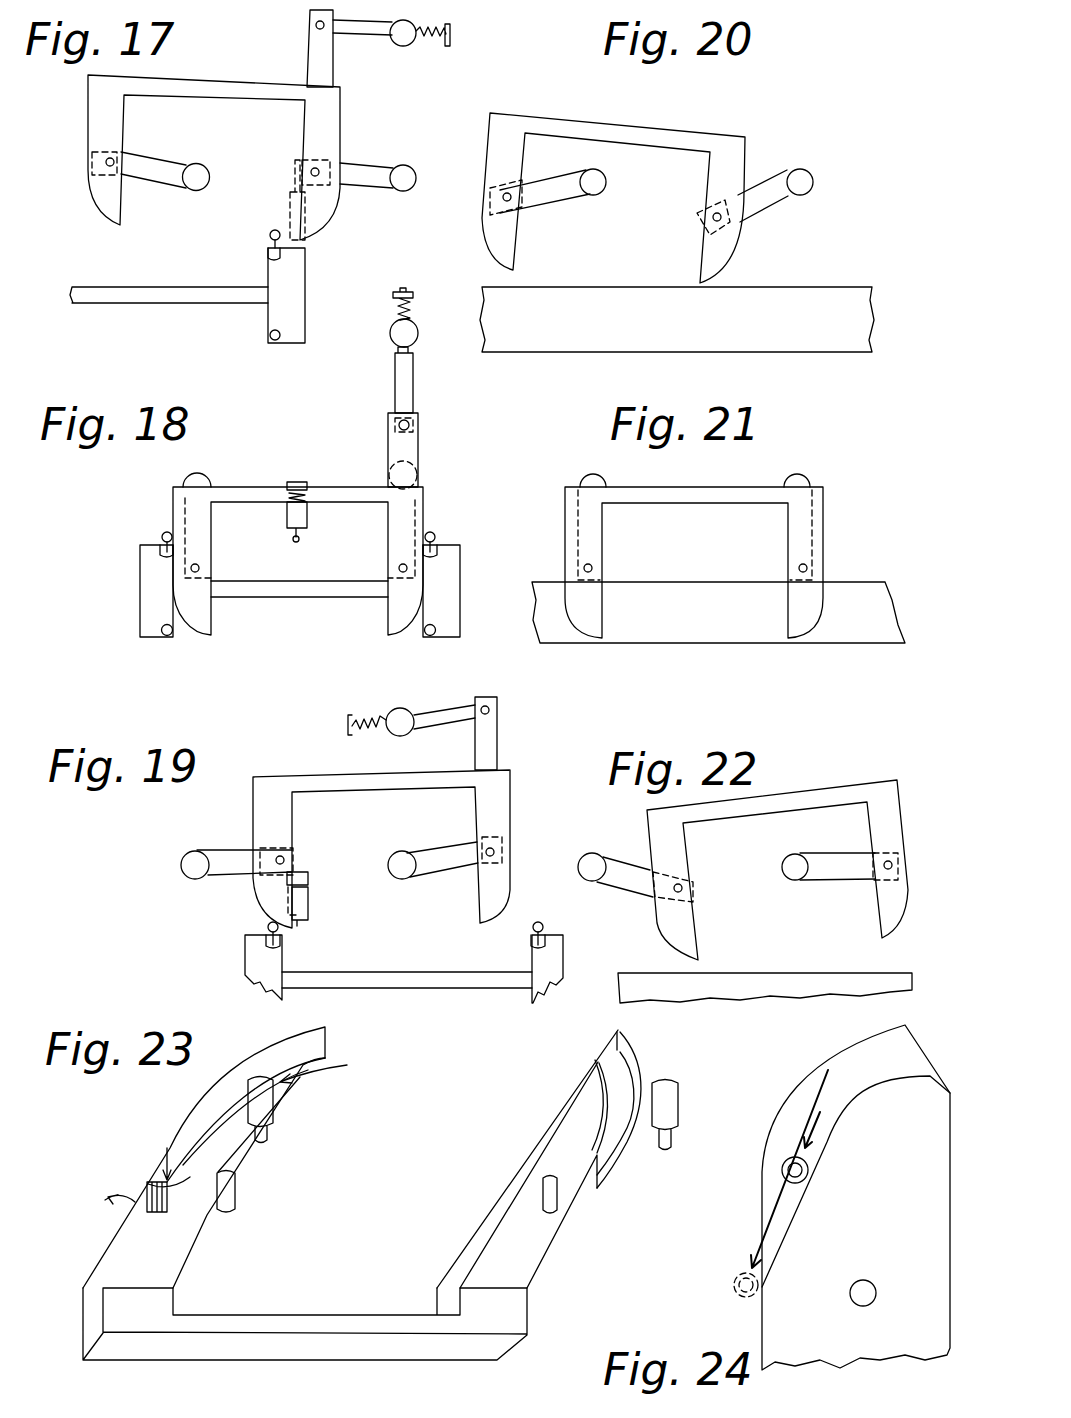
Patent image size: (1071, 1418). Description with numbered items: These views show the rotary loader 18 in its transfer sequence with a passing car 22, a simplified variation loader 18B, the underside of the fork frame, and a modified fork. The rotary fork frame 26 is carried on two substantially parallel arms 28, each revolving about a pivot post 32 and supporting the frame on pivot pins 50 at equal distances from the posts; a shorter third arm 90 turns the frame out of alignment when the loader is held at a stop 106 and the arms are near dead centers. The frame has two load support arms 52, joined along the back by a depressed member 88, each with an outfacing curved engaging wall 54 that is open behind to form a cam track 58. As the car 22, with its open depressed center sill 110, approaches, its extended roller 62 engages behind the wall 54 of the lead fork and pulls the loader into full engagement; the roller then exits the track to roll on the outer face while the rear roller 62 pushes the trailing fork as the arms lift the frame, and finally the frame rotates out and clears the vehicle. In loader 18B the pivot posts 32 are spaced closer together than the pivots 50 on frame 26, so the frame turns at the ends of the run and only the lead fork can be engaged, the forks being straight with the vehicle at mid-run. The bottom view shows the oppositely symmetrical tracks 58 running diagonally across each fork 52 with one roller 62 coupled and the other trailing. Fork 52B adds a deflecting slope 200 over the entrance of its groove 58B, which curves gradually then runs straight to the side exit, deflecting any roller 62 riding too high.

In FIG. 17, the rotary loader 18 is at (88, 93).
In FIG. 20, the loader 18B is at (768, 123).
In FIG. 21, the loader 18B is at (770, 455).
In FIG. 22, the loader 18B is at (851, 770).
In FIG. 17, the car 22 is at (104, 280).
In FIG. 18, the car 22 is at (158, 640).
In FIG. 20, the car 22 is at (677, 319).
In FIG. 21, the car 22 is at (718, 612).
In FIG. 19, the car 22 is at (245, 967).
In FIG. 22, the car 22 is at (765, 988).
In FIG. 17, the rotary fork frame 26 is at (276, 86).
In FIG. 18, the rotary fork frame 26 is at (362, 486).
In FIG. 20, the rotary fork frame 26 is at (640, 134).
In FIG. 21, the rotary fork frame 26 is at (680, 487).
In FIG. 19, the rotary fork frame 26 is at (318, 776).
In FIG. 22, the rotary fork frame 26 is at (765, 795).
In FIG. 23, the rotary fork frame 26 is at (337, 1314).
In FIG. 24, the rotary fork frame 26 is at (845, 1370).
In FIG. 17, the arms 28 is at (150, 152).
In FIG. 18, the arms 28 is at (180, 507).
In FIG. 20, the arms 28 is at (570, 200).
In FIG. 21, the arms 28 is at (578, 530).
In FIG. 19, the arms 28 is at (220, 850).
In FIG. 22, the arms 28 is at (623, 893).
In FIG. 17, the pivot post 32 is at (200, 165).
In FIG. 18, the pivot post 32 is at (185, 472).
In FIG. 20, the pivot post 32 is at (607, 182).
In FIG. 21, the pivot post 32 is at (595, 468).
In FIG. 19, the pivot post 32 is at (182, 860).
In FIG. 22, the pivot post 32 is at (591, 853).
In FIG. 17, the pivot pins 50 is at (95, 165).
In FIG. 18, the pivot pins 50 is at (200, 568).
In FIG. 20, the pivot pins 50 is at (510, 205).
In FIG. 21, the pivot pins 50 is at (592, 568).
In FIG. 22, the pivot pins 50 is at (685, 892).
In FIG. 23, the pivot pins 50 is at (238, 1208).
In FIG. 24, the pivot pins 50 is at (868, 1283).
In FIG. 17, the load support arms 52 is at (125, 218).
In FIG. 18, the load support arms 52 is at (212, 628).
In FIG. 19, the load support arms 52 is at (258, 898).
In FIG. 23, the load support arms 52 is at (100, 1200).
In FIG. 24, the fork 52B is at (857, 1372).
In FIG. 23, the engaging wall 54 is at (203, 1088).
In FIG. 23, the cam track 58 is at (192, 1141).
In FIG. 24, the groove 58B is at (833, 1082).
In FIG. 17, the roller 62 is at (272, 230).
In FIG. 18, the roller 62 is at (162, 535).
In FIG. 19, the roller 62 is at (266, 927).
In FIG. 23, the roller 62 is at (278, 1118).
In FIG. 24, the roller 62 is at (745, 1272).
In FIG. 23, the depressed member 88 is at (228, 1314).
In FIG. 17, the third arm 90 is at (370, 38).
In FIG. 18, the third arm 90 is at (390, 388).
In FIG. 19, the third arm 90 is at (464, 720).
In FIG. 19, the stop 106 is at (310, 912).
In FIG. 17, the center sill 110 is at (196, 285).
In FIG. 24, the deflecting slope 200 is at (907, 1030).